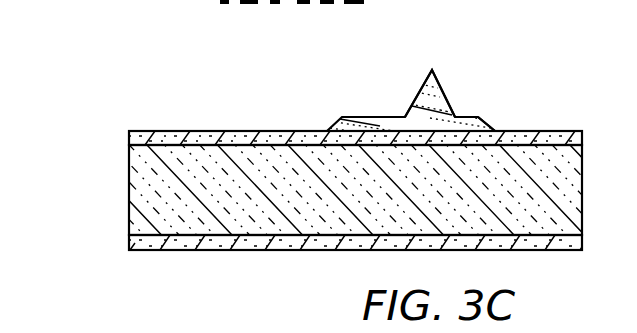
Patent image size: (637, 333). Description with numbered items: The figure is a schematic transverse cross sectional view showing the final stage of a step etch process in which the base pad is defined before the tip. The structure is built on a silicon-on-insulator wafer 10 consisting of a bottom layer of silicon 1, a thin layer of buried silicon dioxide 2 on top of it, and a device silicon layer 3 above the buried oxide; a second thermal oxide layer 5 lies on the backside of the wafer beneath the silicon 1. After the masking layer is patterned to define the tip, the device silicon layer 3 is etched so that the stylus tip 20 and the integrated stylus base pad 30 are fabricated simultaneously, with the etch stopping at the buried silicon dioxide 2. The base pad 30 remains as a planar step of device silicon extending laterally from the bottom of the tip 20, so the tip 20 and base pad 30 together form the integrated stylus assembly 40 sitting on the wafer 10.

The silicon 1 is at (129, 202).
The buried silicon dioxide 2 is at (129, 141).
The device silicon 3 is at (380, 127).
The second thermal oxide layer 5 is at (129, 241).
The SOI wafer 10 is at (102, 101).
The stylus tip 20 is at (433, 80).
The stylus base pad 30 is at (487, 127).
The integrated stylus assembly 40 is at (545, 61).